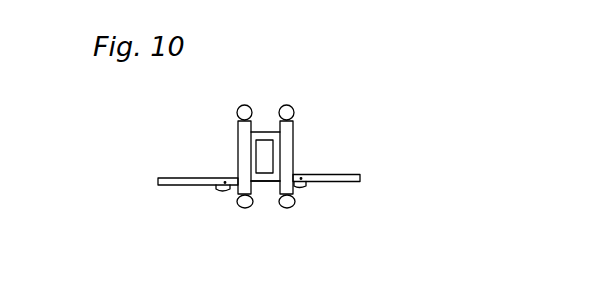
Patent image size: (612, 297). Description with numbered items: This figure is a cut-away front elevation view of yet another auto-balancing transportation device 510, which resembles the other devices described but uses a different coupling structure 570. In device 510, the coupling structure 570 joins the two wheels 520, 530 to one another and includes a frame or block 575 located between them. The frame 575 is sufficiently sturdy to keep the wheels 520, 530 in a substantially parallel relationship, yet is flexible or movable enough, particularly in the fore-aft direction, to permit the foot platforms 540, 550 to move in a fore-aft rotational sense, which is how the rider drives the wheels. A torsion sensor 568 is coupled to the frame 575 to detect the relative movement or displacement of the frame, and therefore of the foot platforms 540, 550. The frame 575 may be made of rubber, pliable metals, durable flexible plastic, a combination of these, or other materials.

The auto-balancing transportation device 510 is at (268, 160).
The wheel 520 is at (297, 203).
The wheel 530 is at (237, 111).
The platform 540 is at (340, 174).
The platform 550 is at (188, 178).
The torsion sensor 568 is at (263, 140).
The coupling structure 570 is at (250, 218).
The frame 575 is at (268, 182).